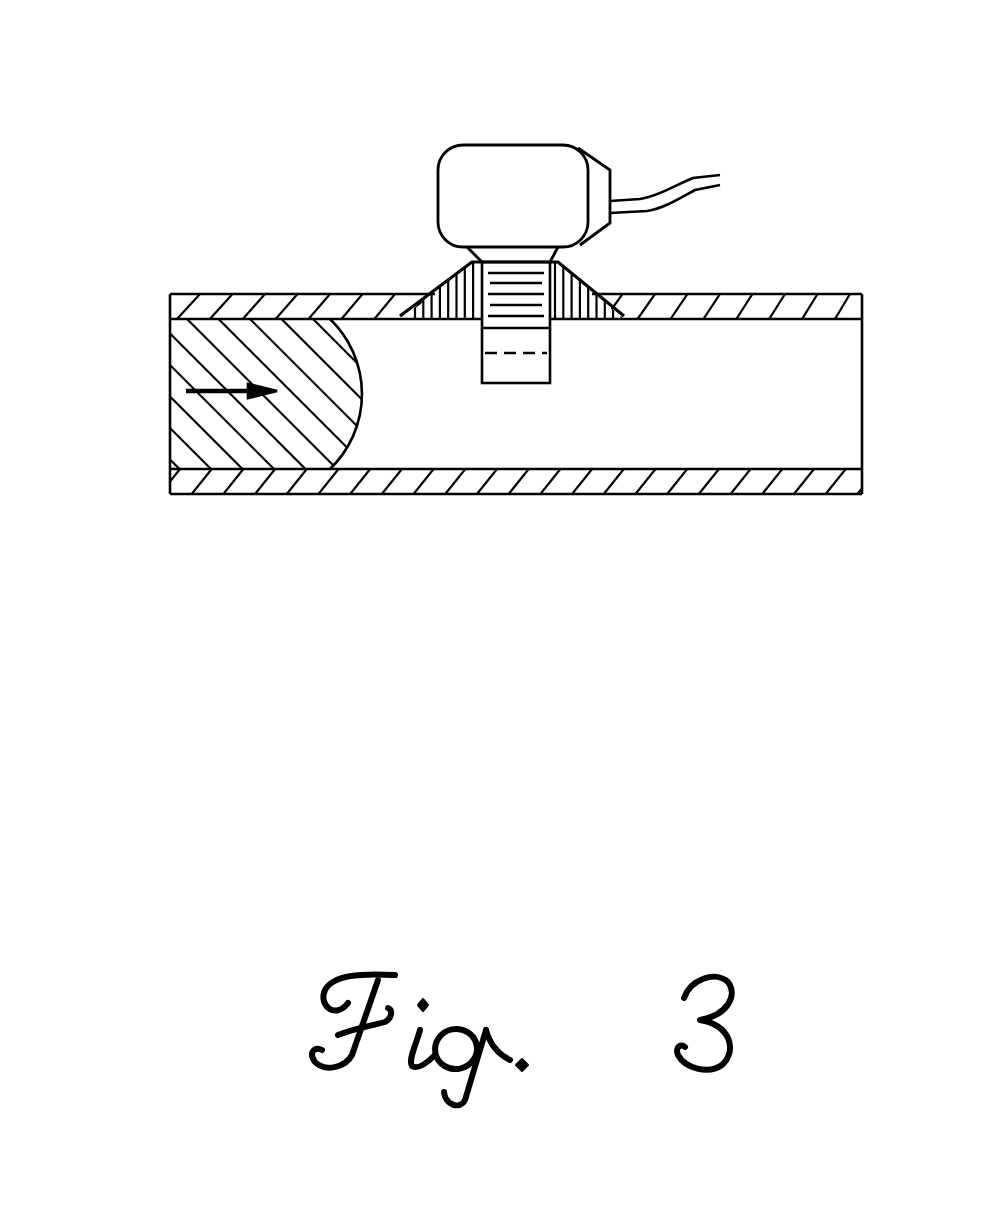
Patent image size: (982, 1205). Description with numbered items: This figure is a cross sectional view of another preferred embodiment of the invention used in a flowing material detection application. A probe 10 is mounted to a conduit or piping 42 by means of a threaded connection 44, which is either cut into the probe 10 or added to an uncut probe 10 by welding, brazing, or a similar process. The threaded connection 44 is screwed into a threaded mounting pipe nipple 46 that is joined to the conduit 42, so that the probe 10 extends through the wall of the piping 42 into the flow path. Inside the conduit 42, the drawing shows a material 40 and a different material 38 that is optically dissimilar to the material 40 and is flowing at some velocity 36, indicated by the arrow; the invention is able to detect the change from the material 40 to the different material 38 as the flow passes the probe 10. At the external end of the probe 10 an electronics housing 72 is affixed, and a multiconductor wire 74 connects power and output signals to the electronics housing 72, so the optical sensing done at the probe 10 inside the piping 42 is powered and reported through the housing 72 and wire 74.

The probe 10 is at (540, 362).
The velocity 36 is at (196, 388).
The different material 38 is at (303, 441).
The material 40 is at (575, 452).
The piping 42 is at (767, 478).
The threaded connection 44 is at (482, 329).
The threaded mounting pipe nipple 46 is at (438, 277).
The electronics housing 72 is at (540, 167).
The multiconductor wire 74 is at (668, 195).